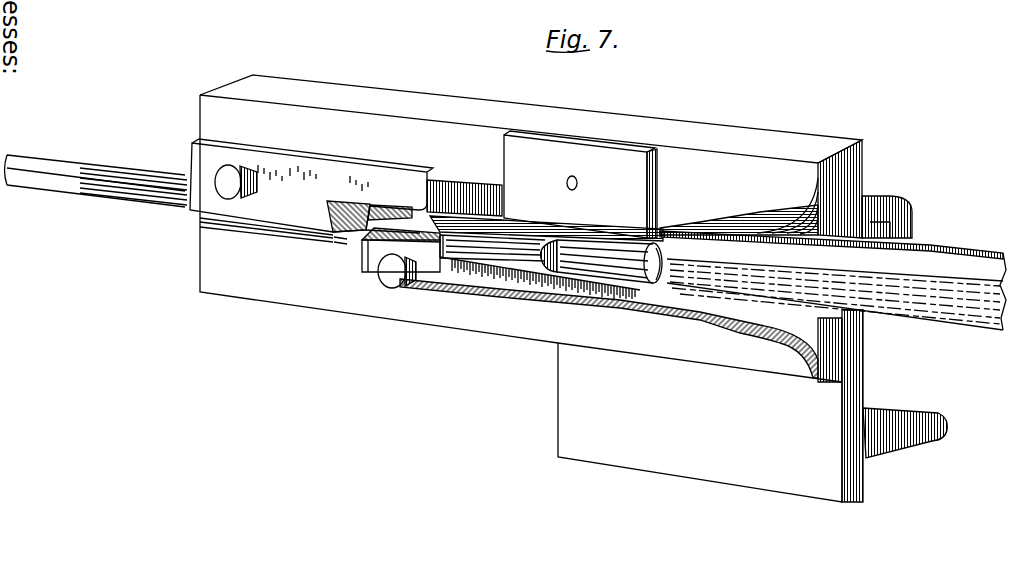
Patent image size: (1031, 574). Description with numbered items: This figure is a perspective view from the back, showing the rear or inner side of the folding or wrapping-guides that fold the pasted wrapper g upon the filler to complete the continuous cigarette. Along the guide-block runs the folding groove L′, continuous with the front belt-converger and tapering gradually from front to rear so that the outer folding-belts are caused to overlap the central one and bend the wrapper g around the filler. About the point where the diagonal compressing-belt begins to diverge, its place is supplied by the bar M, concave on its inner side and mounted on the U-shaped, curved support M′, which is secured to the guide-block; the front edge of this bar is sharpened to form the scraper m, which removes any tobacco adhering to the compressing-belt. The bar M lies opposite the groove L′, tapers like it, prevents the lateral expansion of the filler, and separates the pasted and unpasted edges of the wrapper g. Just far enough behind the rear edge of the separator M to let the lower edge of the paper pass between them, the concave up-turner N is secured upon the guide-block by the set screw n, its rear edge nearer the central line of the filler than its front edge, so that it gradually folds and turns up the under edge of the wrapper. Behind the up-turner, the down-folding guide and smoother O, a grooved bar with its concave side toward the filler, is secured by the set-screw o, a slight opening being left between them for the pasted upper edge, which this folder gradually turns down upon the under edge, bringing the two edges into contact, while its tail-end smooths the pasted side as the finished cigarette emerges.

The groove L′ is at (804, 214).
The down-folding guide and smoother O is at (311, 185).
The set-screw o is at (236, 182).
The concave guide (up-turner) N is at (369, 247).
The set screw n is at (397, 271).
The bar (separator) M is at (601, 261).
The U-shaped curved support M′ is at (508, 246).
The scraper m is at (658, 276).
The wrapper g is at (506, 243).